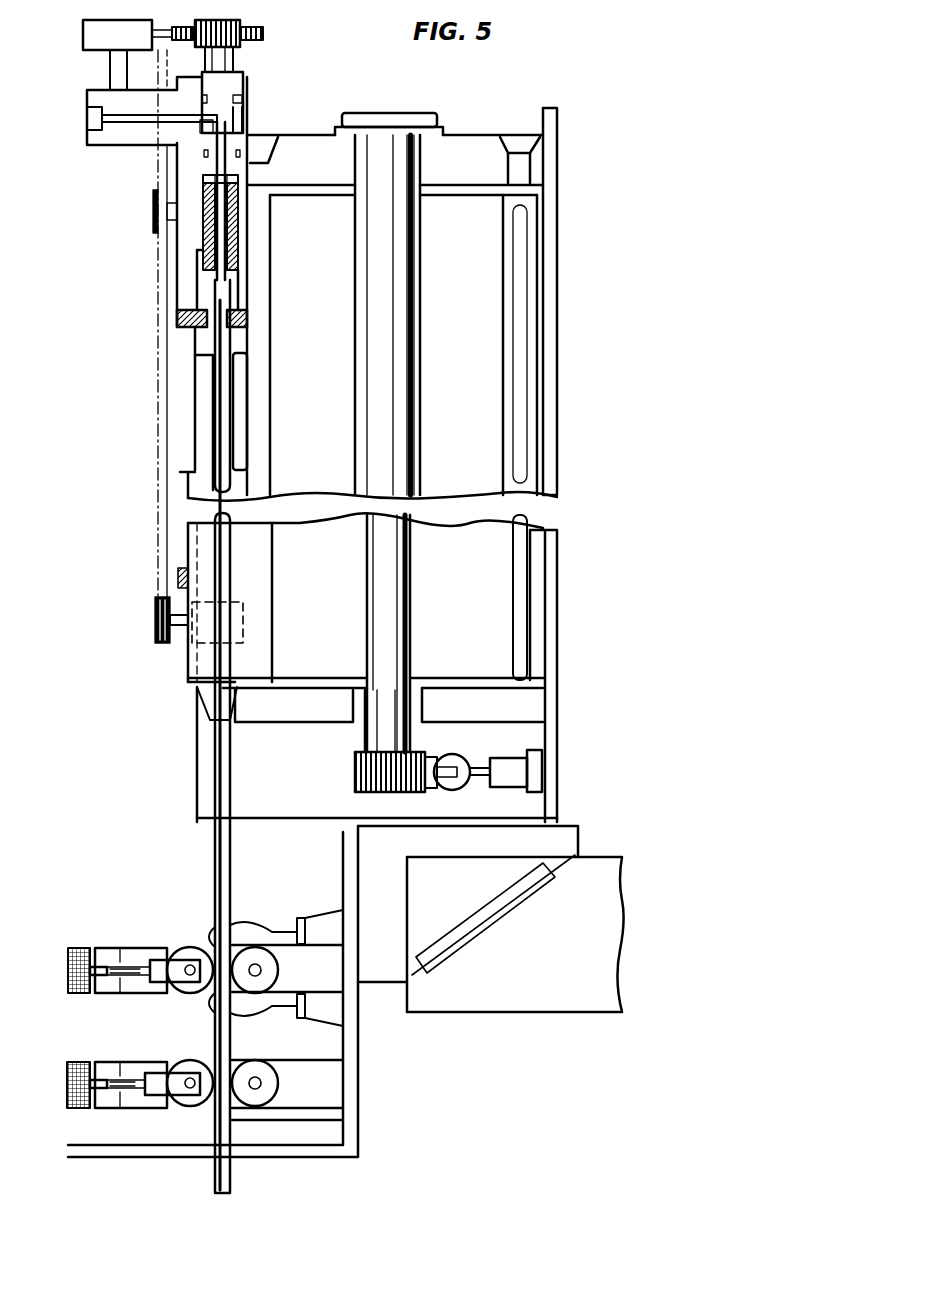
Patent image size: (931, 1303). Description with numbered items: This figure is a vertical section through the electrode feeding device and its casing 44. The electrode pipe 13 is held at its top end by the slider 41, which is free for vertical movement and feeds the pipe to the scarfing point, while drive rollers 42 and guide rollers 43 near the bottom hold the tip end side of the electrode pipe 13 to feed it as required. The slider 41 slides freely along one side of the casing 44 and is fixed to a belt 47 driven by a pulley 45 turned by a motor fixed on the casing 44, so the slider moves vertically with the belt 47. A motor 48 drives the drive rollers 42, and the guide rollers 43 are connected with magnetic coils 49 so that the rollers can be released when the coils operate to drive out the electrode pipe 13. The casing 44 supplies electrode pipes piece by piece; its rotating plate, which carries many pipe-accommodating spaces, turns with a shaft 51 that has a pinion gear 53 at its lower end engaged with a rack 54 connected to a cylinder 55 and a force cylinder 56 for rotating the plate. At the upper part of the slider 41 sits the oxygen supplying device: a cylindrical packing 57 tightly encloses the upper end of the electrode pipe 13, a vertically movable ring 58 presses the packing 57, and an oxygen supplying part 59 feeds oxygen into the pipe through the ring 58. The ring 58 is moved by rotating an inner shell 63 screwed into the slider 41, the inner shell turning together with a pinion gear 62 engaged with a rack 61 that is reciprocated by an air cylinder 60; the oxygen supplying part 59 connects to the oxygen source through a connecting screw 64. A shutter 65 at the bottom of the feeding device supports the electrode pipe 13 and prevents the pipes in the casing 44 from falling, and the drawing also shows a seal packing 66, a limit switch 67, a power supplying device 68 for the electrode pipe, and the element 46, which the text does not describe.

The electrode pipe 13 is at (223, 340).
The slider 41 is at (182, 286).
The drive rollers 42 is at (270, 968).
The guide rollers 43 is at (187, 950).
The casing 44 is at (560, 462).
The pulley 45 is at (243, 610).
The adjusting knob 46 is at (155, 635).
The belt 47 is at (157, 406).
The motor 48 is at (253, 925).
The magnetic coils 49 is at (77, 947).
The shaft 51 is at (410, 572).
The pinion gear 53 is at (355, 788).
The rack 54 is at (428, 757).
The cylinder 55 is at (450, 772).
The force cylinder 56 is at (492, 783).
The cylindrical packing 57 is at (202, 247).
The ring 58 is at (203, 178).
The oxygen supplying part 59 is at (180, 113).
The air cylinder 60 is at (83, 48).
The rack 61 is at (263, 33).
The pinion gear 62 is at (237, 47).
The inner shell 63 is at (240, 73).
The connecting screw 64 is at (87, 124).
The shutter 65 is at (200, 685).
The seal packing 66 is at (203, 100).
The limit switch 67 is at (180, 575).
The power supplying device 68 is at (203, 448).